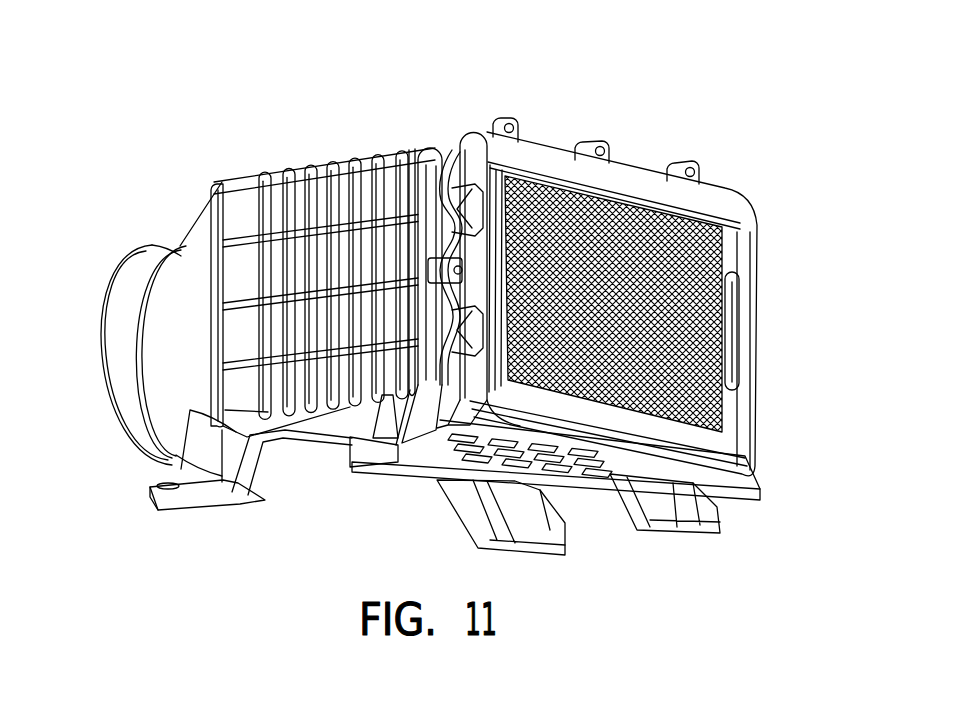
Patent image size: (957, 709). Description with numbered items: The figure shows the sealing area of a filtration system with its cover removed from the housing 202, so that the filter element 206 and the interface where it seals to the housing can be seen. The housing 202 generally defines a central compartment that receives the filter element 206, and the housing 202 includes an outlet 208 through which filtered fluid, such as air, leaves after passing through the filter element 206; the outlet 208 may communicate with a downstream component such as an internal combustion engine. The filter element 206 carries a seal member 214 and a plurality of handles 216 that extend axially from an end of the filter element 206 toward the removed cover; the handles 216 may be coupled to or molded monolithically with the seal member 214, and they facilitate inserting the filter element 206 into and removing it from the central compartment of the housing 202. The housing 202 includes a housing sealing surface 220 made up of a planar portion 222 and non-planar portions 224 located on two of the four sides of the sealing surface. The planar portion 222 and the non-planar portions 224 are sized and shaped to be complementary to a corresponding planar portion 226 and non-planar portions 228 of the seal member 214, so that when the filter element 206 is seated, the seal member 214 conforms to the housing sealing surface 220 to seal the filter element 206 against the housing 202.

The housing 202 is at (238, 258).
The filter element 206 is at (685, 250).
The outlet 208 is at (127, 380).
The seal member 214 is at (638, 185).
The handles 216 is at (503, 232).
The housing sealing surface 220 is at (480, 436).
The planar portion 222 is at (412, 236).
The non-planar portions 224 is at (433, 207).
The planar portion 226 is at (474, 133).
The non-planar portions 228 is at (445, 182).